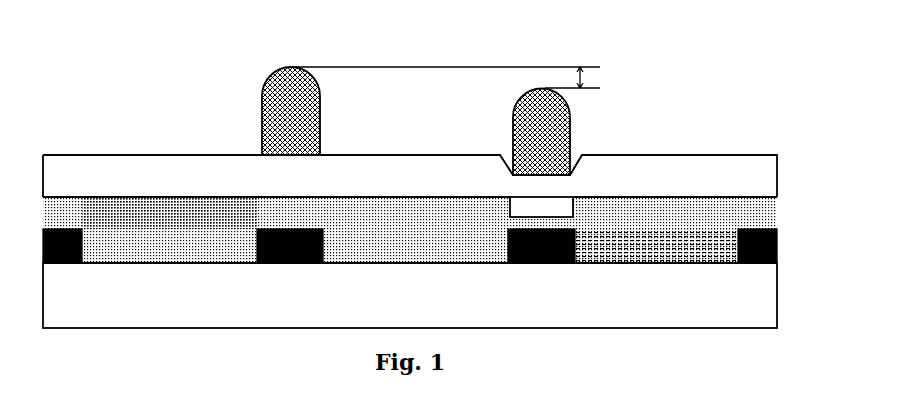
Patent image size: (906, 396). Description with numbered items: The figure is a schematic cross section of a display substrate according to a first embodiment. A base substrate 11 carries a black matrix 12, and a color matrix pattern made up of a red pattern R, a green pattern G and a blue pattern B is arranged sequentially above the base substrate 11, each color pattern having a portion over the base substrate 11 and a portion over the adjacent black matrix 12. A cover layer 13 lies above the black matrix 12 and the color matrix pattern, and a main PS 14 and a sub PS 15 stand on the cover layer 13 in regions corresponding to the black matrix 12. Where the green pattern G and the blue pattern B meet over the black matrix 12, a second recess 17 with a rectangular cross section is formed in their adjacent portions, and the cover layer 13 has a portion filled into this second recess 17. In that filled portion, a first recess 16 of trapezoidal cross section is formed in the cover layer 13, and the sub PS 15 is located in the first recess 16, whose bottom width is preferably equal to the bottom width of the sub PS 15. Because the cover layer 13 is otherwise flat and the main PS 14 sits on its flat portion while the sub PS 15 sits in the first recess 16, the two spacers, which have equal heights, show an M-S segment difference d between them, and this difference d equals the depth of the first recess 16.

The base substrate 11 is at (130, 303).
The black matrix 12 is at (262, 230).
The cover layer 13 is at (143, 180).
The main PS 14 is at (315, 133).
The sub PS 15 is at (568, 150).
The first recess 16 is at (507, 160).
The second recess 17 is at (550, 214).
The red pattern R is at (212, 228).
The green pattern G is at (432, 197).
The blue pattern B is at (718, 230).
The M-S segment difference d is at (446, 77).